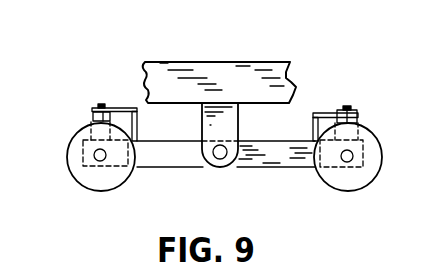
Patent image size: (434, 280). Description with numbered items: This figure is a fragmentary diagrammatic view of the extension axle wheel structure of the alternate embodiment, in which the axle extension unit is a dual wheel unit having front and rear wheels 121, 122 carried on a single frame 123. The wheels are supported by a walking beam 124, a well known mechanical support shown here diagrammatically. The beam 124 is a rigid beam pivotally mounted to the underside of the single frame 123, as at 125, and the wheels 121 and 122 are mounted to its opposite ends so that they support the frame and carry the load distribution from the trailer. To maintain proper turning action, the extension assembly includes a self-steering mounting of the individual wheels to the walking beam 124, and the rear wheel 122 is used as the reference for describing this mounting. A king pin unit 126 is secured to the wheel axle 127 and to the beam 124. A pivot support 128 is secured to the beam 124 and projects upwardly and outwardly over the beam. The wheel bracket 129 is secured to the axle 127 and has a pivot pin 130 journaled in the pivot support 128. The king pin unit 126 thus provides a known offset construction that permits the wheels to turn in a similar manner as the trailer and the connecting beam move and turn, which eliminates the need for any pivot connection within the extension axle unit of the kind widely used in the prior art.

The front wheel 121 is at (115, 178).
The rear wheel 122 is at (332, 178).
The single frame 123 is at (291, 82).
The walking beam 124 is at (244, 171).
The pivot mounting 125 is at (242, 138).
The king pin unit 126 is at (130, 105).
The wheel axle 127 is at (106, 155).
The pivot support 128 is at (137, 123).
The wheel bracket 129 is at (96, 117).
The pivot pin 130 is at (102, 104).